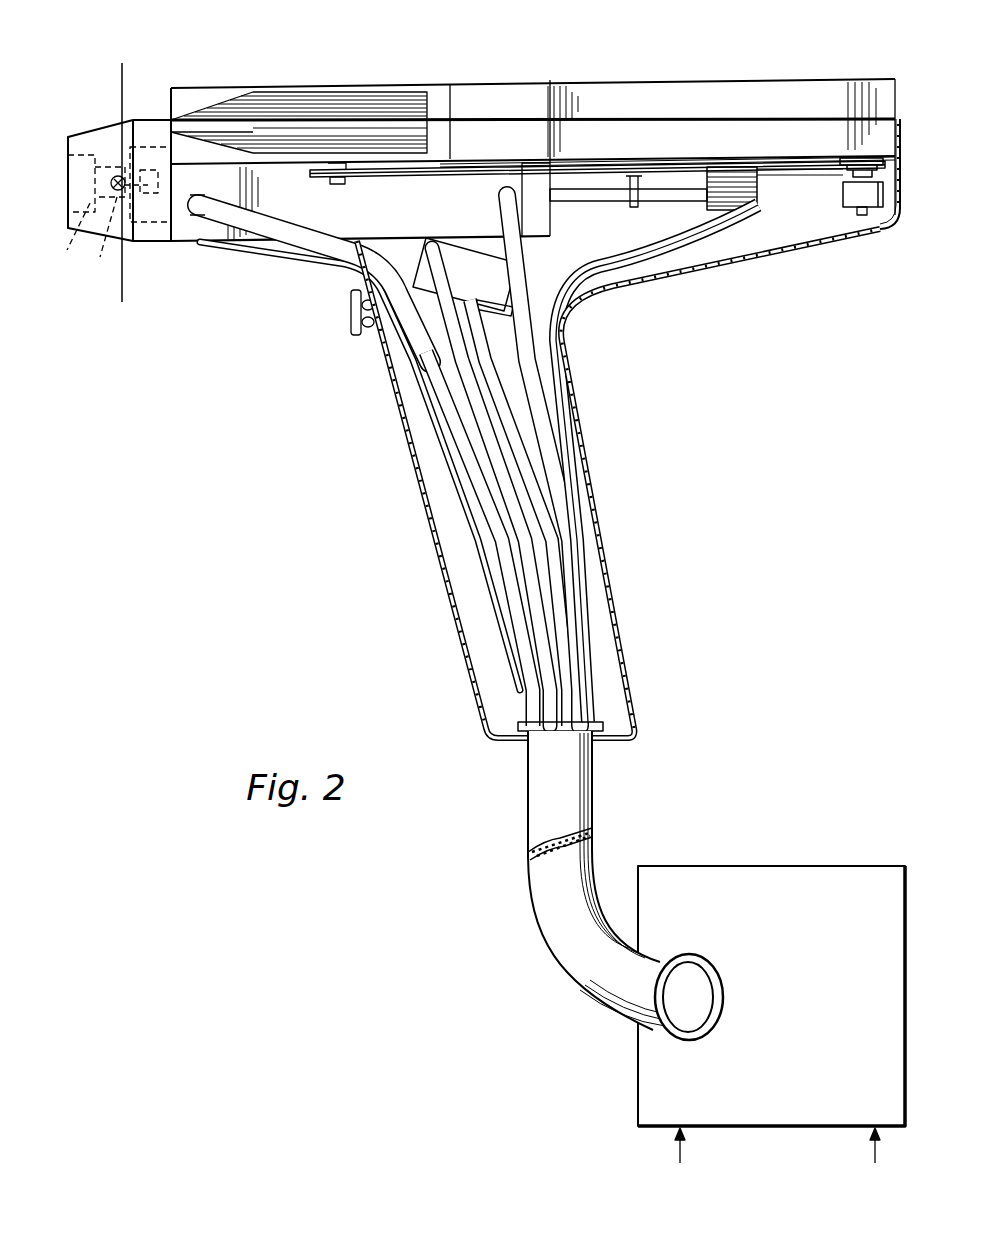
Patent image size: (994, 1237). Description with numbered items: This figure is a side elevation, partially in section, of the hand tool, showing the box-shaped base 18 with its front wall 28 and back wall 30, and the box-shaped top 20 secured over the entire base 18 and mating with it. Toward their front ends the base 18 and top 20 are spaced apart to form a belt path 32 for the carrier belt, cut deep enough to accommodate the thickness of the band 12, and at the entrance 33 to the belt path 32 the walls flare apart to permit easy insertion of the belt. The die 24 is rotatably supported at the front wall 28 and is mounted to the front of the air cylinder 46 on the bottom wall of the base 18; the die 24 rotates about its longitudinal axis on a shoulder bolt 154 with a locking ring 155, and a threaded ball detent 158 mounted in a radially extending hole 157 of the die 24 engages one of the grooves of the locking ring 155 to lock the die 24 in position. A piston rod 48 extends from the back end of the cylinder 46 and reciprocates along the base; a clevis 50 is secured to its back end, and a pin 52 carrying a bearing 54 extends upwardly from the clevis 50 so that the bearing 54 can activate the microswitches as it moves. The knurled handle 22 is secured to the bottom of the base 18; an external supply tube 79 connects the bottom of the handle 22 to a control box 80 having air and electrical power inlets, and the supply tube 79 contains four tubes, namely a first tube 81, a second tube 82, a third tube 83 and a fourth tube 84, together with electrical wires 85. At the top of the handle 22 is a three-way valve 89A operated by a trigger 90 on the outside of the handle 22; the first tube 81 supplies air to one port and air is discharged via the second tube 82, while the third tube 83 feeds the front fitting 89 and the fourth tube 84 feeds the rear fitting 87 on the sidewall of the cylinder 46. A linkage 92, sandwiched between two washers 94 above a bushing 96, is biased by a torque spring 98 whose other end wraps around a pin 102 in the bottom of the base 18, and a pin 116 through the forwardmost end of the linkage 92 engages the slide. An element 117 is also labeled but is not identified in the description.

The band 12 is at (108, 58).
The base 18 is at (682, 128).
The top 20 is at (627, 82).
The knurled handle 22 is at (595, 498).
The die 24 is at (153, 120).
The front wall 28 is at (167, 228).
The back wall 30 is at (901, 124).
The belt path 32 is at (404, 121).
The entrance 33 is at (302, 114).
The air cylinder 46 is at (313, 220).
The piston rod 48 is at (587, 202).
The clevis 50 is at (886, 196).
The pin 52 is at (865, 216).
The bearing 54 is at (884, 159).
The external supply tube 79 is at (597, 799).
The control box 80 is at (643, 1068).
The first tube 81 is at (477, 407).
The second tube 82 is at (520, 463).
The third tube 83 is at (267, 223).
The fourth tube 84 is at (545, 351).
The electrical wires 85 is at (640, 264).
The rear fitting 87 is at (497, 204).
The front fitting 89 is at (213, 219).
The three-way valve 89A is at (397, 338).
The trigger 90 is at (350, 328).
The linkage 92 is at (397, 178).
The washers 94 is at (766, 161).
The bushing 96 is at (725, 212).
The torque spring 98 is at (687, 200).
The pin 102 is at (622, 167).
The pin 116 is at (338, 184).
The tab 117 is at (329, 170).
The shoulder bolt 154 is at (67, 250).
The locking ring 155 is at (88, 239).
The radially extending hole 157 is at (117, 177).
The threaded ball detent 158 is at (123, 177).